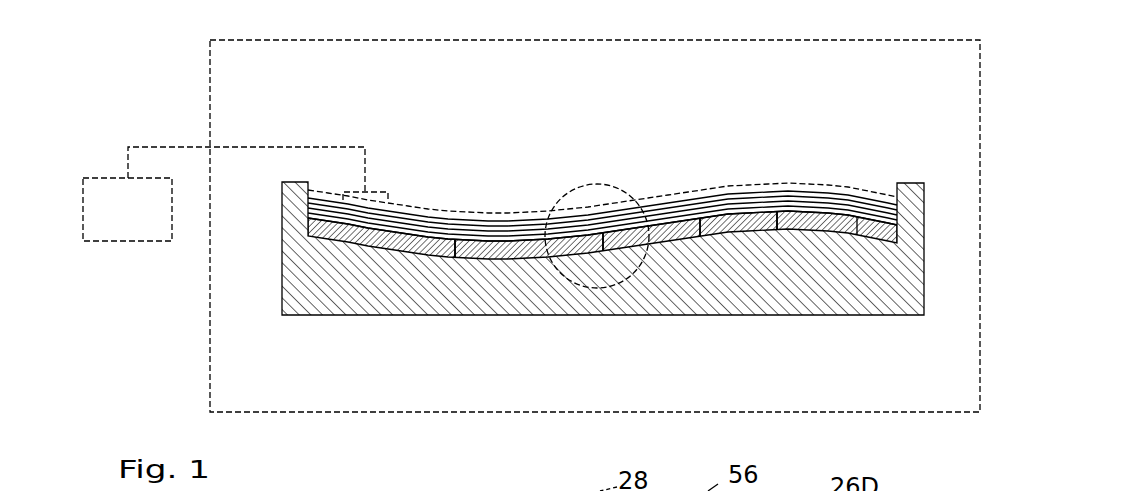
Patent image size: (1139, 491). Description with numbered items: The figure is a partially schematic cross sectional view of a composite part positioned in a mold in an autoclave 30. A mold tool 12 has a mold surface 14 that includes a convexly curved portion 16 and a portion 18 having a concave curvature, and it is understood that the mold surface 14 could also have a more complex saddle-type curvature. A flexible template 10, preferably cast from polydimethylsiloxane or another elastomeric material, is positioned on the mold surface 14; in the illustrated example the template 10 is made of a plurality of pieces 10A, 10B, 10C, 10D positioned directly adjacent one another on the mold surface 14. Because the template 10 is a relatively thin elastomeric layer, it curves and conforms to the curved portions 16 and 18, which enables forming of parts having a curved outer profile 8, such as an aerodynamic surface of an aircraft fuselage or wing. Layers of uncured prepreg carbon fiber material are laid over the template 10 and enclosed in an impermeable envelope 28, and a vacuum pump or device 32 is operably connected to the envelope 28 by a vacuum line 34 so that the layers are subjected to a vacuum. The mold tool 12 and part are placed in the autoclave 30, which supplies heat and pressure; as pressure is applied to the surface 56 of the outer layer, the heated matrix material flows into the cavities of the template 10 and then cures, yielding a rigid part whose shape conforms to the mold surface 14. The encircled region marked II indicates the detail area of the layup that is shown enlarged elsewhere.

The curved outer profile 8 is at (340, 248).
The flexible template 10 is at (638, 294).
The template piece 10A is at (380, 247).
The template piece 10B is at (519, 247).
The template piece 10C is at (663, 242).
The template piece 10D is at (857, 235).
The mold tool 12 is at (807, 295).
The mold surface 14 is at (828, 240).
The convexly curved portion 16 is at (777, 235).
The concave curvature portion 18 is at (483, 262).
The impermeable envelope 28 is at (443, 208).
The autoclave 30 is at (981, 162).
The vacuum pump or device 32 is at (122, 243).
The vacuum line 34 is at (320, 148).
The surface of outer layer 56 is at (533, 213).
The section indicator II is at (618, 193).